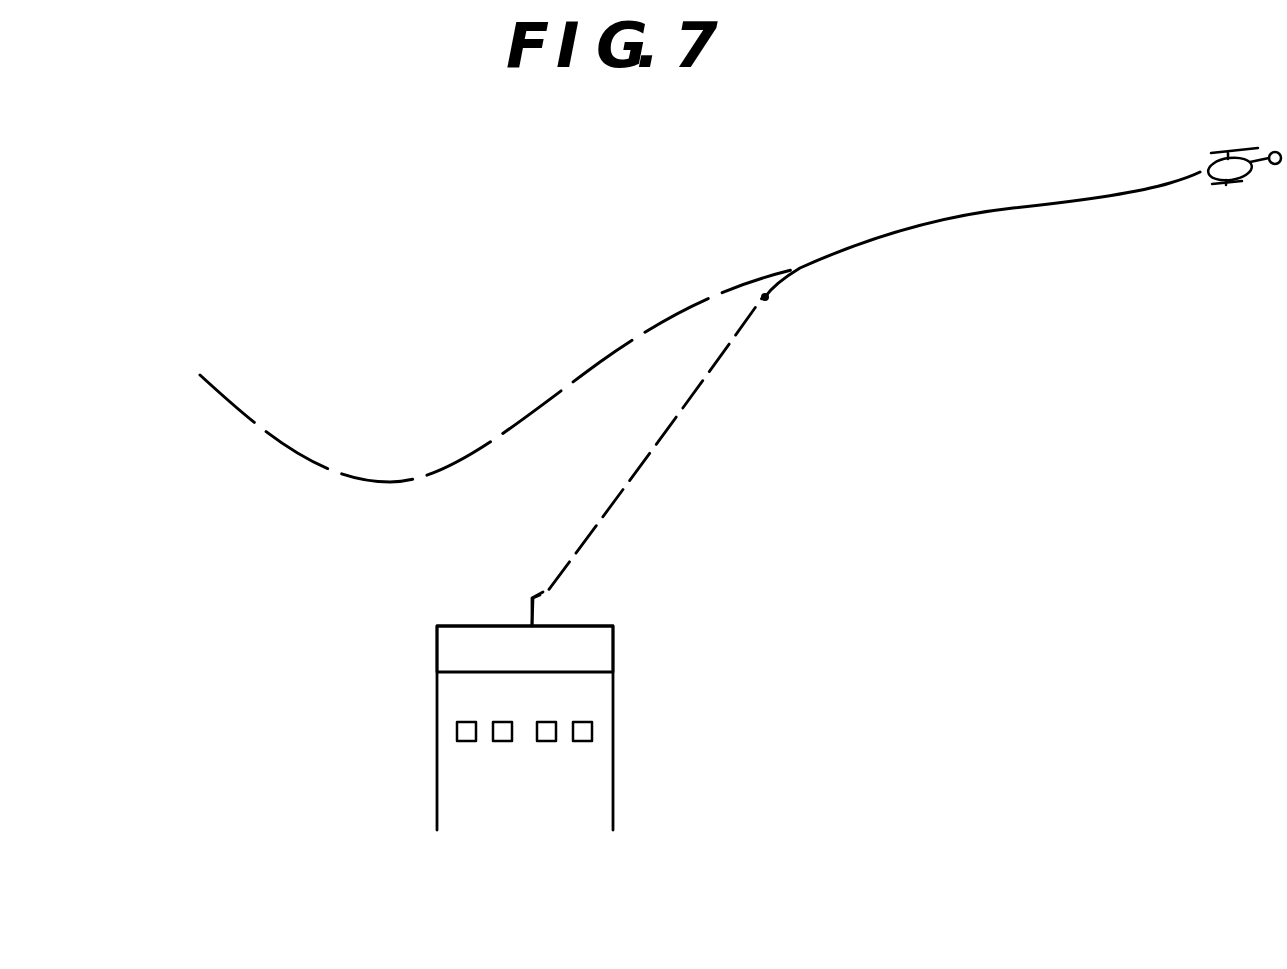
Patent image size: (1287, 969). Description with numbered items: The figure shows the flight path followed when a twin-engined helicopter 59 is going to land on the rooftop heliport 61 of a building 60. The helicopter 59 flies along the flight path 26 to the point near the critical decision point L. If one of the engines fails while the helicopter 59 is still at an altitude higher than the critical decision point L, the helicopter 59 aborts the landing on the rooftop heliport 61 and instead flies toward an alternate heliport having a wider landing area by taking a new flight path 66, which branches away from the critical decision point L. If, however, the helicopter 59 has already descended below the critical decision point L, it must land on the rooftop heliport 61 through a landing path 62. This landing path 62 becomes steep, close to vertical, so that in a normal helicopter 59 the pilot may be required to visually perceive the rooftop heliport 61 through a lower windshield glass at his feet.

The flight path 26 is at (1013, 208).
The helicopter 59 is at (1223, 185).
The new flight path 66 is at (572, 380).
The landing path 62 is at (667, 443).
The rooftop heliport 61 is at (470, 627).
The building 60 is at (435, 723).
The critical decision point L is at (771, 300).